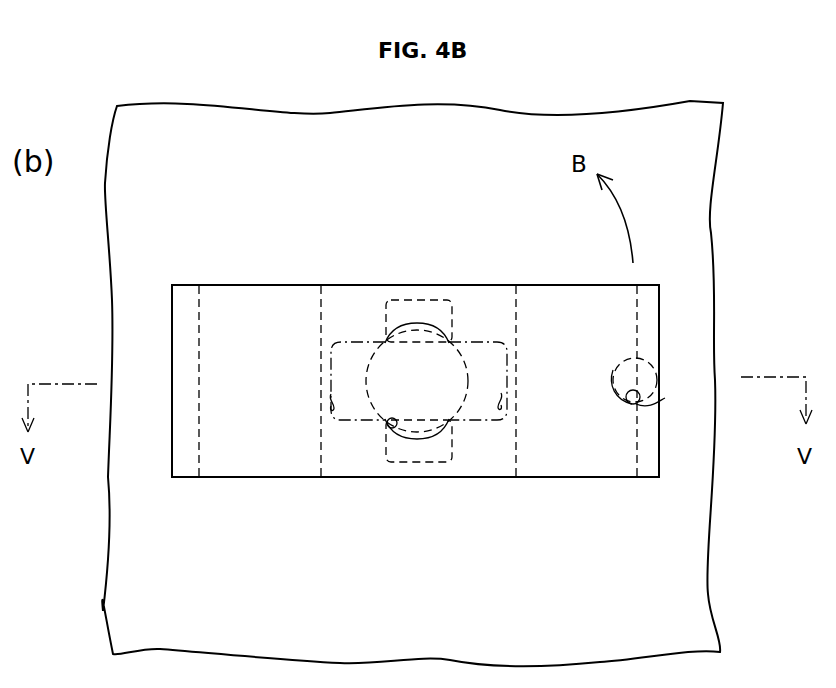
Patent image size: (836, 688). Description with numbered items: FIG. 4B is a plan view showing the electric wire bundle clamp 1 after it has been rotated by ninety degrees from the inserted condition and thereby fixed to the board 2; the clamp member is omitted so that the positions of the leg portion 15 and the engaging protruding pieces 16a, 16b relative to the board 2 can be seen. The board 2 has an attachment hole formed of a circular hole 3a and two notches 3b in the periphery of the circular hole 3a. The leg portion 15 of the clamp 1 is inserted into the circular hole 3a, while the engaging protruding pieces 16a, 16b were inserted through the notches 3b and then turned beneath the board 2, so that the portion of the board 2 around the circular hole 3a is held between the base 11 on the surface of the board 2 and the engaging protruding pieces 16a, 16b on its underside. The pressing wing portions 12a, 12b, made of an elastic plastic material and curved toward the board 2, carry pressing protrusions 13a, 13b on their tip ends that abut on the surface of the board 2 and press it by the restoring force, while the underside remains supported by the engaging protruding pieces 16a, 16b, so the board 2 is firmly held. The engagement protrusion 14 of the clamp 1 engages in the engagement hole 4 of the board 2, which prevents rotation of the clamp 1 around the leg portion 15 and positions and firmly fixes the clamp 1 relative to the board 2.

The electric wire bundle clamp 1 is at (259, 255).
The board 2 is at (600, 123).
The circular hole 3a is at (383, 432).
The notches 3b is at (332, 407).
The engagement hole 4 is at (657, 407).
The base 11 is at (471, 476).
The pressing wing portion 12a is at (265, 472).
The pressing wing portion 12b is at (535, 469).
The pressing protrusion 13a is at (185, 472).
The pressing protrusion 13b is at (645, 469).
The engagement protrusion 14 is at (640, 358).
The leg portion 15 is at (460, 347).
The engaging protruding piece 16a is at (410, 462).
The engaging protruding piece 16b is at (395, 297).